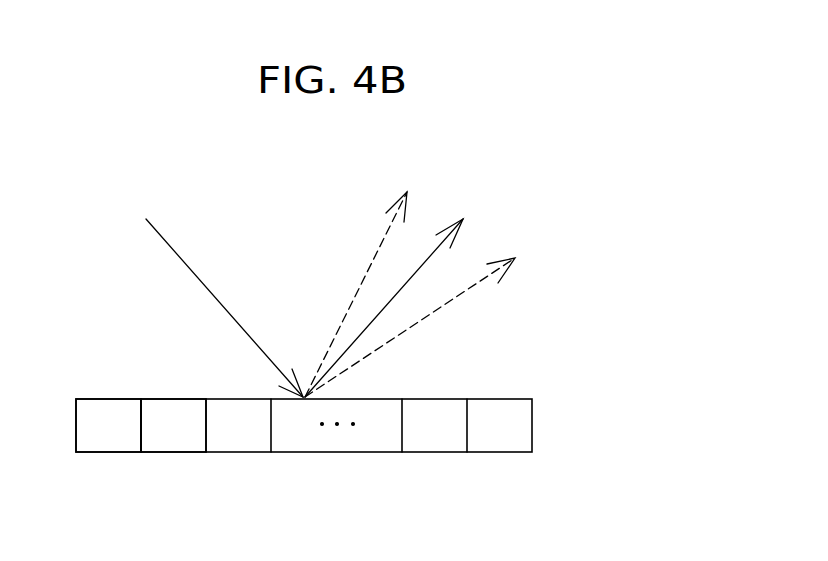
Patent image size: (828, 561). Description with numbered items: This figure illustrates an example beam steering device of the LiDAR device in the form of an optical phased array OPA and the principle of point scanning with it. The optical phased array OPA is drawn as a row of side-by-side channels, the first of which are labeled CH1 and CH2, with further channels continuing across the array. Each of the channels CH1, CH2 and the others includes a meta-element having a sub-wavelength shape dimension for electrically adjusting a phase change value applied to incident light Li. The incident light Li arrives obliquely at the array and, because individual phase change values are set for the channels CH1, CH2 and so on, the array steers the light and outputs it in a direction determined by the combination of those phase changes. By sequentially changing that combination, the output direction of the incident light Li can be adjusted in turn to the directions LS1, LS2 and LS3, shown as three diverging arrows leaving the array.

The optical phased array OPA is at (548, 423).
The first channel CH1 is at (105, 452).
The second channel CH2 is at (171, 452).
The incident light Li is at (221, 308).
The first steered output direction LS1 is at (370, 280).
The second steered output direction LS2 is at (400, 295).
The third steered output direction LS3 is at (431, 316).